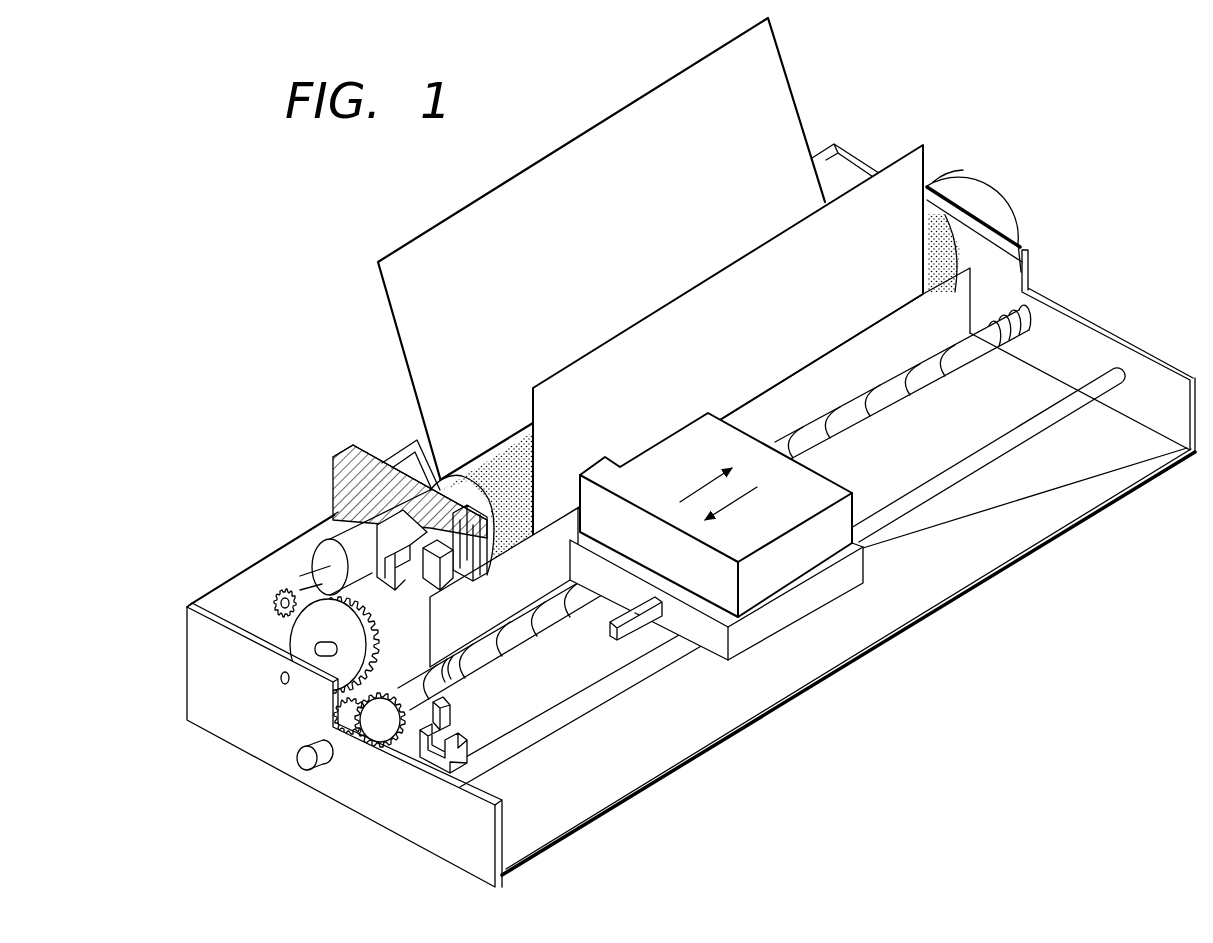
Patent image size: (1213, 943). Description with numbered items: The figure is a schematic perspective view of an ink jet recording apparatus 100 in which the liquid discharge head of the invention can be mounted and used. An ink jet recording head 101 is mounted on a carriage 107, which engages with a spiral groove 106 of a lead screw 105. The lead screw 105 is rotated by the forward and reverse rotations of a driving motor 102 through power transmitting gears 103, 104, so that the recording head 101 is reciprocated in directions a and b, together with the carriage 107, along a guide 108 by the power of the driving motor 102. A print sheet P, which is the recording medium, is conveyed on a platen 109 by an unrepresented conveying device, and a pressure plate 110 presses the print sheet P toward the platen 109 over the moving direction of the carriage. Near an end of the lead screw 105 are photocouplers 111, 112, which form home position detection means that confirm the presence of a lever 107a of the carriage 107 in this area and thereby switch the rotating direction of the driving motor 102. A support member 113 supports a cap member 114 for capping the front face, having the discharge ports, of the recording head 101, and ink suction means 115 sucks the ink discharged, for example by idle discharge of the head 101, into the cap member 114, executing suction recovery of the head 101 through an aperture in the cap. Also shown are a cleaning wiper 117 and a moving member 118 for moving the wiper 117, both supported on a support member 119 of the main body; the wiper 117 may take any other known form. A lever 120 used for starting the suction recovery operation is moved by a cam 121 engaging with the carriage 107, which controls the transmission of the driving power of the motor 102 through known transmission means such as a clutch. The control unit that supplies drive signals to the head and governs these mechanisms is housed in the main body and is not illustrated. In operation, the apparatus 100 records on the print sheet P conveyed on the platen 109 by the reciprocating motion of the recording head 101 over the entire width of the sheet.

The print sheet P is at (784, 98).
The ink jet recording apparatus 100 is at (882, 139).
The ink jet recording head 101 is at (817, 487).
The driving motor 102 is at (330, 540).
The power transmitting gear 103 is at (303, 632).
The power transmitting gear 104 is at (367, 733).
The lead screw 105 is at (633, 631).
The spiral groove 106 is at (481, 578).
The carriage 107 is at (862, 570).
The lever 107a is at (699, 647).
The guide 108 is at (607, 703).
The platen 109 is at (943, 250).
The pressure plate 110 is at (855, 355).
The photocoupler 111 is at (458, 720).
The photocoupler 112 is at (443, 767).
The support member 113 is at (397, 457).
The cap member 114 is at (505, 587).
The ink suction means 115 is at (365, 500).
The cleaning wiper 117 is at (457, 520).
The moving member 118 is at (344, 497).
The support member 119 is at (352, 448).
The lever 120 is at (230, 600).
The cam 121 is at (413, 717).